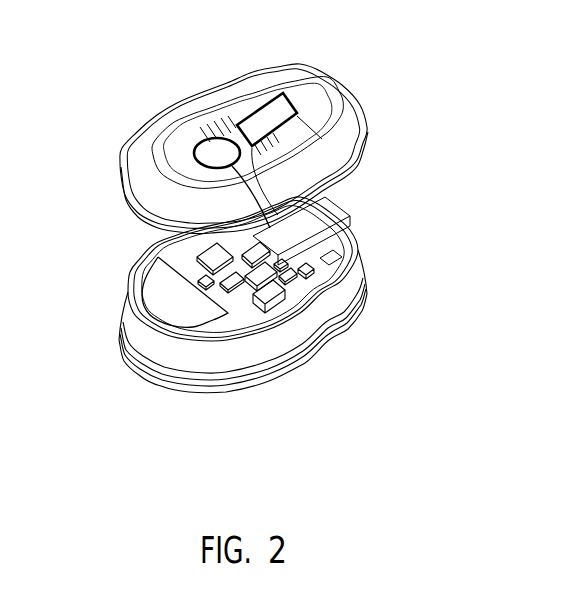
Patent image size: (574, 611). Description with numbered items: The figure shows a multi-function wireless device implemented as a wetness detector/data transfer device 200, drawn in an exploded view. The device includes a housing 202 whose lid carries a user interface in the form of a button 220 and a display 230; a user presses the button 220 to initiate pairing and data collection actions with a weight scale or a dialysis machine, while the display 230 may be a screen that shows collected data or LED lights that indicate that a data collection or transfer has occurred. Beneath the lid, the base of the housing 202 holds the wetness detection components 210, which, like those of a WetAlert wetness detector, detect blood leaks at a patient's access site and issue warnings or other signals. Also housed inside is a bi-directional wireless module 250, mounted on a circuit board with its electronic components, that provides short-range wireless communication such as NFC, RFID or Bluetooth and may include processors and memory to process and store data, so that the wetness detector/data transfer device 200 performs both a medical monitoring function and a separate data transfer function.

The wetness detector/data transfer device 200 is at (345, 63).
The housing 202 is at (366, 127).
The wetness detection components 210 is at (357, 241).
The button 220 is at (200, 141).
The display 230 is at (257, 110).
The bi-directional wireless module 250 is at (165, 292).